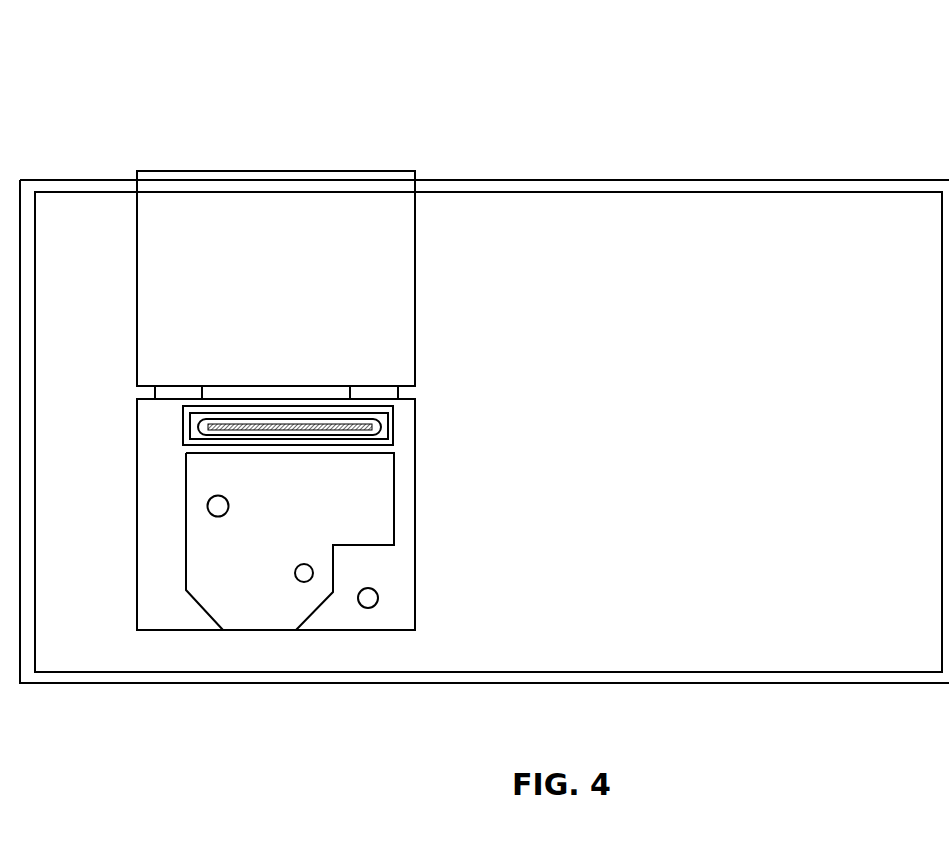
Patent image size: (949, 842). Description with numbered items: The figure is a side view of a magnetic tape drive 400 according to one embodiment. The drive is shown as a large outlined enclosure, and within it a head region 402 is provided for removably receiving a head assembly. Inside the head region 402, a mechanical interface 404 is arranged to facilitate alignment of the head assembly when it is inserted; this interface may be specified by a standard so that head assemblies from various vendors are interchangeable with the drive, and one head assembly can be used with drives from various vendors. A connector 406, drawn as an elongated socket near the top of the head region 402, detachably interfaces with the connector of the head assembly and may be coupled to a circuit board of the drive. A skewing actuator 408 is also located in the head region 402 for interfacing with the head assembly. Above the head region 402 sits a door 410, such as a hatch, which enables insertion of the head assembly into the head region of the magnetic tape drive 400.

The magnetic tape drive 400 is at (645, 125).
The head region 402 is at (264, 590).
The mechanical interface 404 is at (229, 506).
The connector 406 is at (185, 430).
The skewing actuator 408 is at (378, 600).
The door 410 is at (390, 348).